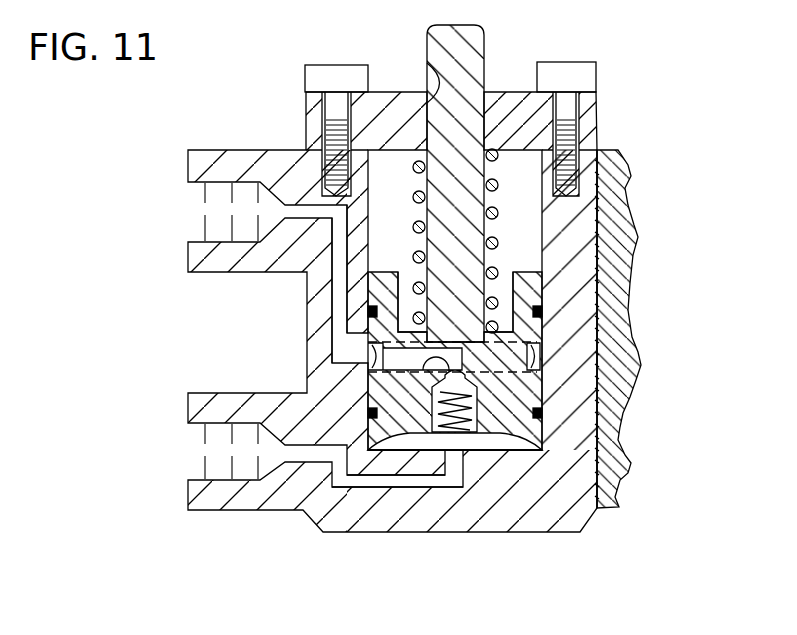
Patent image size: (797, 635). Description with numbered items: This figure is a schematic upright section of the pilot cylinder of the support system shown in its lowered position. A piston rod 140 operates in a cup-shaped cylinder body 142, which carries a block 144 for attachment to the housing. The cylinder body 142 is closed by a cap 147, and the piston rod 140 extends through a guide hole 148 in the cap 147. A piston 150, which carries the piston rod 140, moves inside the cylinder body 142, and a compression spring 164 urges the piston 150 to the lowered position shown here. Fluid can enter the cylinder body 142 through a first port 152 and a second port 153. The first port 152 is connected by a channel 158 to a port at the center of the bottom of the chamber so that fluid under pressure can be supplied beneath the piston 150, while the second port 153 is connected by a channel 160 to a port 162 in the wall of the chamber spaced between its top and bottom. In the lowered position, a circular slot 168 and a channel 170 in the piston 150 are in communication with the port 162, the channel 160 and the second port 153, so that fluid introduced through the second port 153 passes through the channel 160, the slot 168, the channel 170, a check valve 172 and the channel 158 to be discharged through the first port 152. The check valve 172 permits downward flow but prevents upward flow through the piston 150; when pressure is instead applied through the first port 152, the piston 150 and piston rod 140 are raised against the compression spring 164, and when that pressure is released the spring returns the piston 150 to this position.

The piston rod 140 is at (465, 53).
The cylinder body 142 is at (357, 532).
The block 144 is at (615, 373).
The cap 147 is at (585, 125).
The guide hole 148 is at (428, 68).
The piston 150 is at (535, 392).
The first port 152 is at (197, 462).
The second port 153 is at (212, 190).
The channel 158 is at (372, 493).
The channel 160 is at (333, 275).
The port 162 is at (357, 372).
The compression spring 164 is at (420, 225).
The circular slot 168 is at (593, 347).
The channel 170 is at (375, 348).
The check valve 172 is at (455, 378).